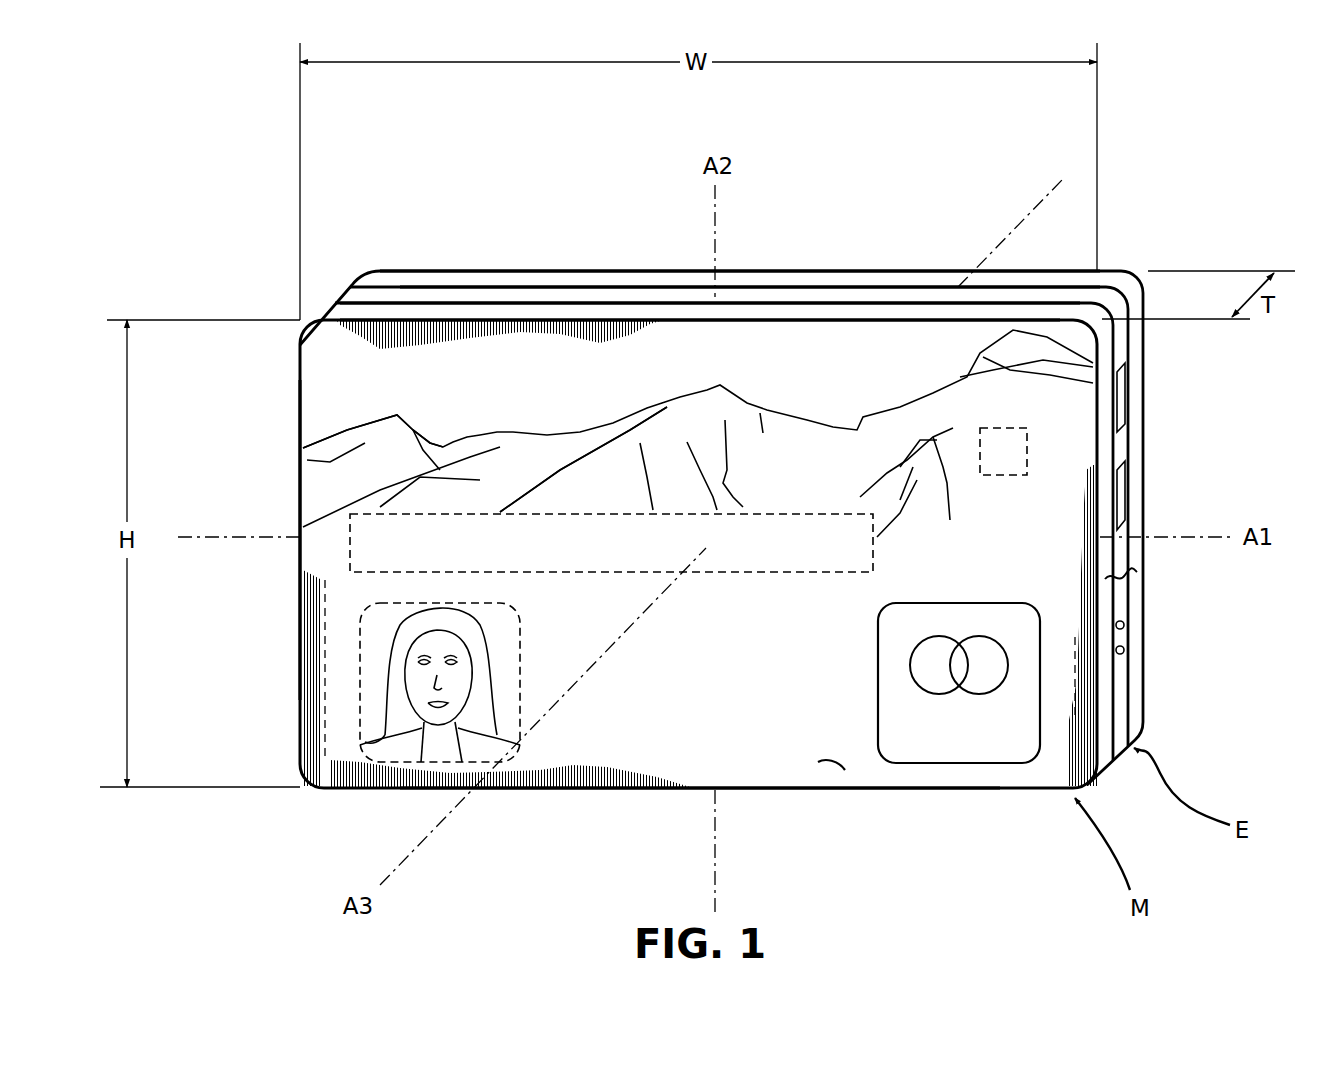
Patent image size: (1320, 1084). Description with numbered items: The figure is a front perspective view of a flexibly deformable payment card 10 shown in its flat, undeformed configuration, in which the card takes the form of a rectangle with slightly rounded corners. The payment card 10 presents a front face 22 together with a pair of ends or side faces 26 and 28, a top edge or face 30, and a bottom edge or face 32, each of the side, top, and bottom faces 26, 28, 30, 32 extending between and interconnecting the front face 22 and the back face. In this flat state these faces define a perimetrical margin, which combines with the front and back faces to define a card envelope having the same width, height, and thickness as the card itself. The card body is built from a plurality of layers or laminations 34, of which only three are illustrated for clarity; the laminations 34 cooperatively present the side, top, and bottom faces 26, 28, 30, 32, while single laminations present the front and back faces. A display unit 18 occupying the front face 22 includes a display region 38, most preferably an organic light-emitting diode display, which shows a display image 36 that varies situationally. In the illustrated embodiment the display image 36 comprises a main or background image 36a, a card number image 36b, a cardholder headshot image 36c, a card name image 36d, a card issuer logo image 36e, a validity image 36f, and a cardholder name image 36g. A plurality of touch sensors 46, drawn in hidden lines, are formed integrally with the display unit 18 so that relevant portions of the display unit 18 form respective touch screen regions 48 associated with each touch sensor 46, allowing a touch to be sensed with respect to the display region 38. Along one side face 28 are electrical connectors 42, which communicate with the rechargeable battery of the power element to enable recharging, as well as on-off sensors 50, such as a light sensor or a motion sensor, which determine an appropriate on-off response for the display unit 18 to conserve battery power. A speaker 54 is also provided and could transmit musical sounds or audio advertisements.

The payment card 10 is at (1140, 242).
The display unit 18 is at (1052, 498).
The front face 22 is at (845, 770).
The side face 26 is at (300, 495).
The side face 28 is at (1137, 572).
The top edge or face 30 is at (757, 307).
The bottom edge or face 32 is at (650, 792).
The laminations 34 is at (425, 312).
The display image 36 is at (500, 412).
The main or background image 36a is at (475, 458).
The card number image 36b is at (512, 525).
The cardholder headshot image 36c is at (495, 655).
The card name image 36d is at (862, 340).
The card issuer logo image 36e is at (975, 620).
The validity image 36f is at (740, 668).
The cardholder name image 36g is at (783, 705).
The display region 38 is at (603, 342).
The electrical connectors 42 is at (1125, 626).
The touch sensors 46 is at (1008, 428).
The touch screen regions 48 is at (610, 548).
The on-off sensors 50 is at (1122, 500).
The speaker 54 is at (1122, 380).